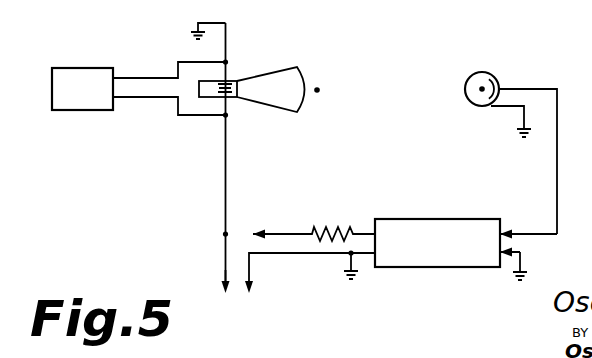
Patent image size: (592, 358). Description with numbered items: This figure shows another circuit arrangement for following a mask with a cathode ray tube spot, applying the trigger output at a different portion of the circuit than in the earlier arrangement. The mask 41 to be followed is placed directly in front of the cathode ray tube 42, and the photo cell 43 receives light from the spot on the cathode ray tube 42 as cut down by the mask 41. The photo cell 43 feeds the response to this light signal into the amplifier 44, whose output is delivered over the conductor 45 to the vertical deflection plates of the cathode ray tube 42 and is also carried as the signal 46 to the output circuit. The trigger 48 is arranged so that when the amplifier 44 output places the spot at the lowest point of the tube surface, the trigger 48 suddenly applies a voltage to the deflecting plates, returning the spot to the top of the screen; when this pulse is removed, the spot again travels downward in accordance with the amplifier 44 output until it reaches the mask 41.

The mask 41 is at (319, 88).
The cathode ray tube 42 is at (278, 77).
The photoelectric cell 43 is at (468, 86).
The amplifier 44 is at (450, 219).
The conductor 45 is at (226, 170).
The signal 46 is at (225, 270).
The trigger 48 is at (96, 40).